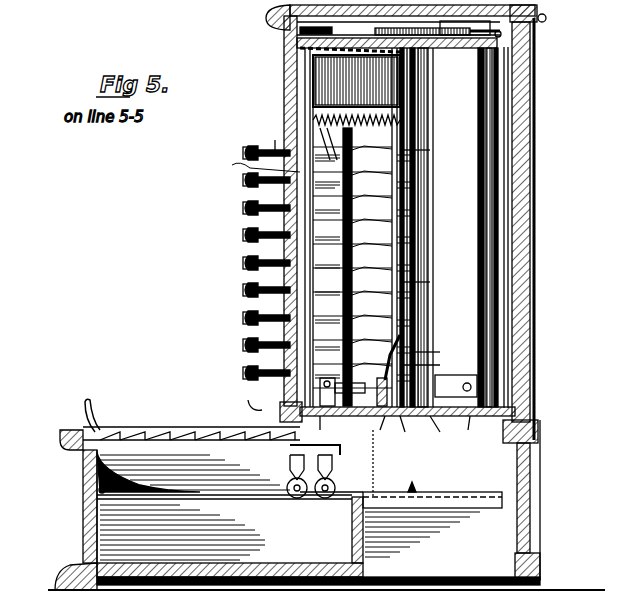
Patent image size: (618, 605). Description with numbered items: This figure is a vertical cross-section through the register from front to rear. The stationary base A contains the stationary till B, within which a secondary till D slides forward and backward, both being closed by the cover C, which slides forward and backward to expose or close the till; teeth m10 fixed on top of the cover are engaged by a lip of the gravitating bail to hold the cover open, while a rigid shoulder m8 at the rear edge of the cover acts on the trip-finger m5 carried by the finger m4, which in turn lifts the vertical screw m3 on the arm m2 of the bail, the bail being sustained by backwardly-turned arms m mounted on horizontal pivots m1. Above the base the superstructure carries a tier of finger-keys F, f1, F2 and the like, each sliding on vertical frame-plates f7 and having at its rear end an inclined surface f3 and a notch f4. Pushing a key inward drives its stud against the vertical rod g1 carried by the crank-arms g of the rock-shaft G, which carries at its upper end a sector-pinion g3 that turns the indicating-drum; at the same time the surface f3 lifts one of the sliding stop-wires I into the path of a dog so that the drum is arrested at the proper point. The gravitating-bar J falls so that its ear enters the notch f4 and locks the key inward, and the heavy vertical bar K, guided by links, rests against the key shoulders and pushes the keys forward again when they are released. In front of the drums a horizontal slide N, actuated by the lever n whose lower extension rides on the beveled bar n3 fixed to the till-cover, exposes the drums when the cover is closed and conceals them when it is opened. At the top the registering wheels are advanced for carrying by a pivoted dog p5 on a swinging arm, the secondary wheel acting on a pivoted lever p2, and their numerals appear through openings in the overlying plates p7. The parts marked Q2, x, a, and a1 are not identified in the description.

The cap Q2 is at (280, 20).
The pivoted dog p5 is at (365, 22).
The overlying plates p7 is at (490, 24).
The pivoted lever p2 is at (500, 34).
The horizontal slide N is at (290, 85).
The lever n is at (350, 66).
The heavy vertical bar K is at (335, 267).
The sector-pinion g3 is at (410, 60).
The vertical sliding wires I is at (430, 222).
The vertical rock-shaft G is at (420, 95).
The notch f4 is at (363, 267).
The link x is at (328, 143).
The inclined surface f3 is at (430, 150).
The finger-key F is at (259, 260).
The finger-key F2 is at (248, 212).
The finger-key f1 is at (260, 335).
The arm m2 is at (388, 335).
The vertical screw m3 is at (440, 352).
The vertical frame-plates f7 is at (440, 365).
The backwardly-turned arms m is at (456, 386).
The finger m4 is at (353, 392).
The rigid shoulder m8 is at (246, 402).
The trip-finger m5 is at (322, 416).
The vertical gravitating-bar J is at (379, 427).
The vertical rod g1 is at (400, 428).
The crank-arms g is at (435, 429).
The horizontal pivots m1 is at (477, 427).
The stationary base A is at (83, 497).
The secondary till D is at (224, 475).
The stationary till B is at (182, 532).
The cover C is at (175, 427).
The teeth m10 is at (160, 427).
The rollers a is at (330, 468).
The bar n3 is at (330, 450).
The track a1 is at (375, 495).